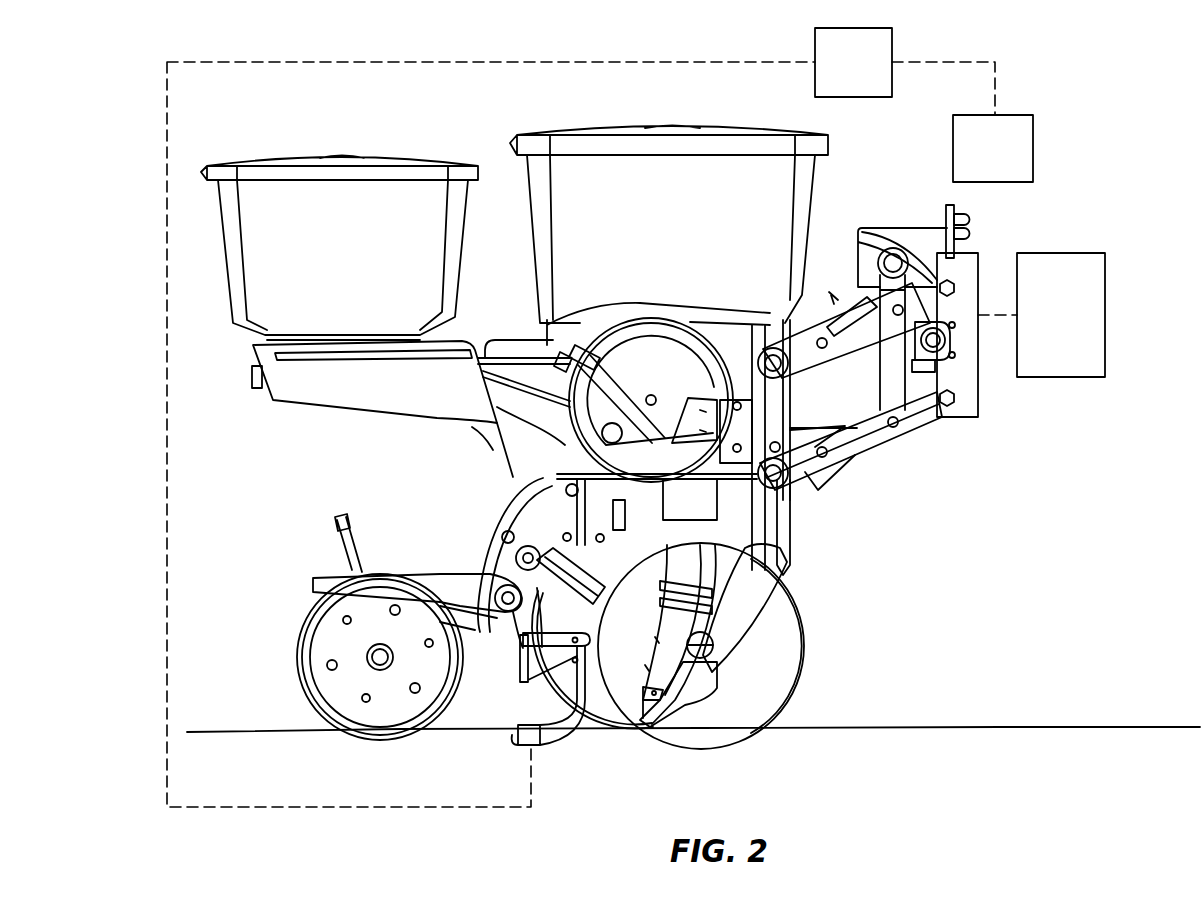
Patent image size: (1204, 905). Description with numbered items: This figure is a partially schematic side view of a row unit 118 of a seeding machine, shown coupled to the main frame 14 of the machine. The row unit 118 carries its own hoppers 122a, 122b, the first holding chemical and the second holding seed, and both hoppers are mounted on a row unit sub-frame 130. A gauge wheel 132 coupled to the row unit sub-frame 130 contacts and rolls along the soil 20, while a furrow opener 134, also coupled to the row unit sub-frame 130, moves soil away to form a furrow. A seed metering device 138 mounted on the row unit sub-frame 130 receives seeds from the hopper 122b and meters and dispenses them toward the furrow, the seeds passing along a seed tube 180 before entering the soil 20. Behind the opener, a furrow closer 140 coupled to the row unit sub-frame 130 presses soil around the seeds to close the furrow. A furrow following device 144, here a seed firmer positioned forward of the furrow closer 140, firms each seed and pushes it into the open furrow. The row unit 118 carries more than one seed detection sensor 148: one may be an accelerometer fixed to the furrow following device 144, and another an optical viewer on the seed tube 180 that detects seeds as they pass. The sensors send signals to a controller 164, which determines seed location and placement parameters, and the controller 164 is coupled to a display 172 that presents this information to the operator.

The main frame 14 is at (1067, 253).
The soil 20 is at (856, 770).
The row unit 118 is at (884, 490).
The hopper 122a is at (293, 160).
The hopper 122b is at (583, 130).
The row unit sub-frame 130 is at (497, 435).
The gauge wheel 132 is at (613, 722).
The furrow opener 134 is at (771, 683).
The seed metering device 138 is at (560, 450).
The furrow closer 140 is at (313, 692).
The furrow following device 144 is at (528, 727).
The seed detection sensor 148 is at (697, 599).
The controller 164 is at (815, 45).
The display 172 is at (1015, 115).
The seed tube 180 is at (677, 635).